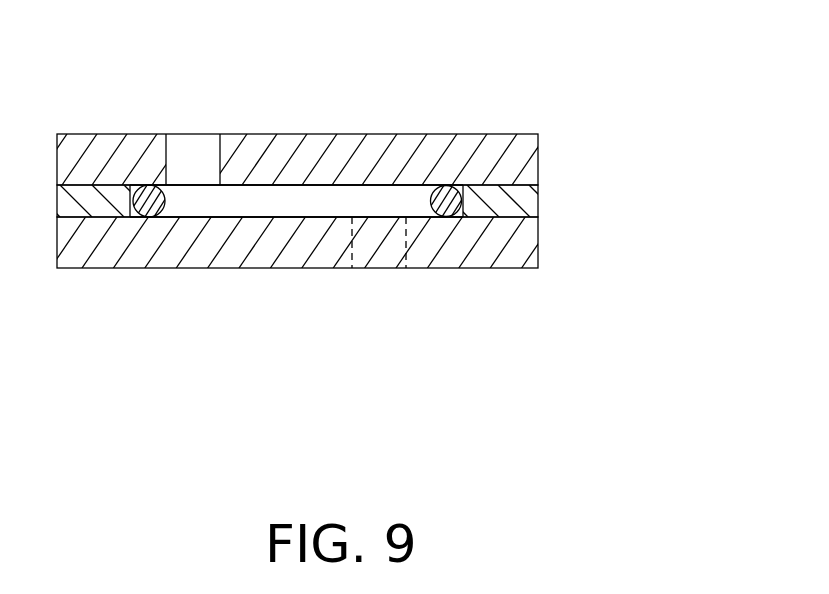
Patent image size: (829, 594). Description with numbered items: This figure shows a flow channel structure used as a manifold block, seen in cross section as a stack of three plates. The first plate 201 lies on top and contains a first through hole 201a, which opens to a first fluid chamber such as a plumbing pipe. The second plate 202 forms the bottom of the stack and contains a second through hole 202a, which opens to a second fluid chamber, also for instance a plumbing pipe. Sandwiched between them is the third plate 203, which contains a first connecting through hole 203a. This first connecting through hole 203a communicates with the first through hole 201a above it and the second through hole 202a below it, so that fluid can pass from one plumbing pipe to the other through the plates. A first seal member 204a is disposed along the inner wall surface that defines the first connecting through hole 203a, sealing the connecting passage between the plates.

The first plate 201 is at (537, 143).
The first through hole 201a is at (218, 160).
The second plate 202 is at (537, 257).
The second through hole 202a is at (402, 243).
The third plate 203 is at (537, 200).
The first connecting through hole 203a is at (293, 200).
The first seal member 204a is at (147, 186).